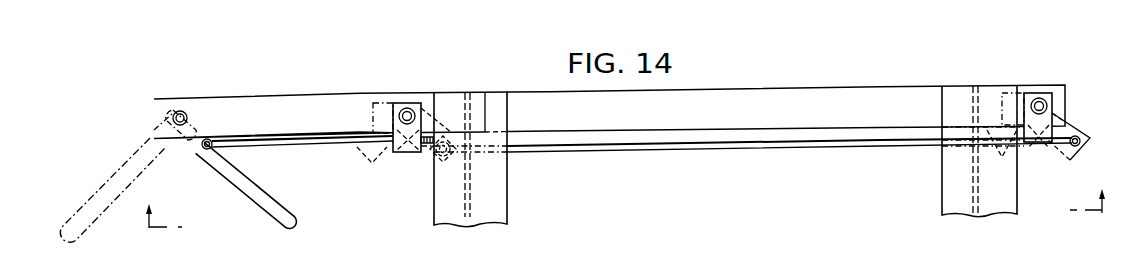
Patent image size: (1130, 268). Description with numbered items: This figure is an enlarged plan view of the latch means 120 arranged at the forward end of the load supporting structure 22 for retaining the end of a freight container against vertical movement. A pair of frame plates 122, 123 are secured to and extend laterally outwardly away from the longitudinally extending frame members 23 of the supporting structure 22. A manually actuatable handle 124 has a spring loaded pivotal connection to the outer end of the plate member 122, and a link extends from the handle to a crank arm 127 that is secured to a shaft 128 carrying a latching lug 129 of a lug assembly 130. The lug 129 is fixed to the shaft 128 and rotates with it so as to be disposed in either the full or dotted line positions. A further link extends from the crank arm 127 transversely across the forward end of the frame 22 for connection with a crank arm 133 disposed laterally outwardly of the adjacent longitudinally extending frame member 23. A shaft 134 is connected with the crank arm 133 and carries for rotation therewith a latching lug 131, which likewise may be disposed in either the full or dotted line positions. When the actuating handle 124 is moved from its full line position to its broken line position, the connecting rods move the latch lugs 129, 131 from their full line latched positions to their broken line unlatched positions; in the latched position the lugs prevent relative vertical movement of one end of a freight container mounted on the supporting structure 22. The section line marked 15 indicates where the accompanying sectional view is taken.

The section line 15- 15 is at (629, 221).
The load supporting structure 22 is at (512, 186).
The longitudinally extending frame members 23 is at (498, 208).
The latch means 120 is at (396, 194).
The frame plate 122 is at (264, 105).
The frame plate 123 is at (992, 93).
The manually actuatable handle 124 is at (240, 186).
The crank arm 127 is at (428, 157).
The shaft 128 is at (404, 107).
The latching lug 129 is at (418, 108).
The lug assembly 130 is at (399, 163).
The latching lug 131 is at (1040, 142).
The crank arm 133 is at (1063, 147).
The shaft 134 is at (1039, 98).